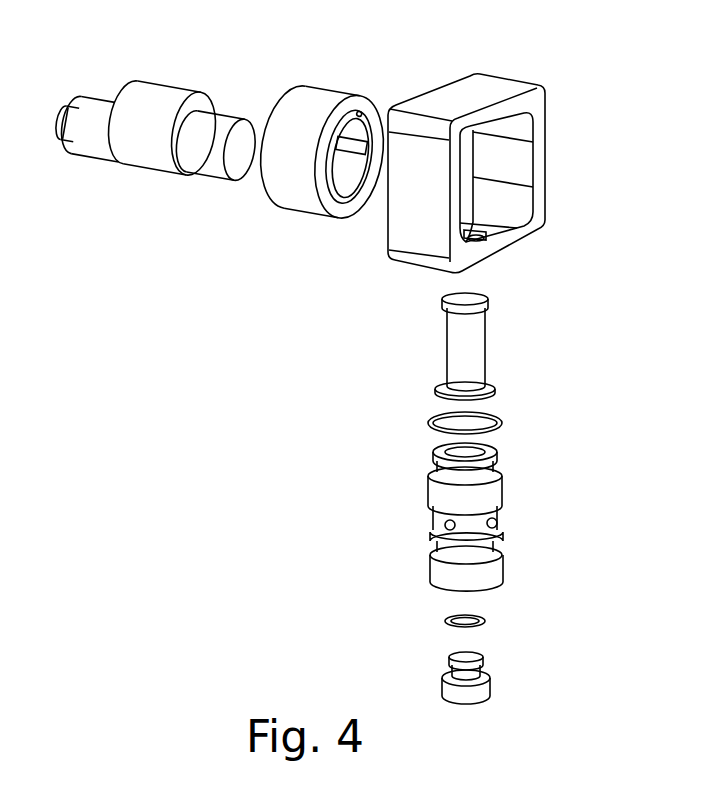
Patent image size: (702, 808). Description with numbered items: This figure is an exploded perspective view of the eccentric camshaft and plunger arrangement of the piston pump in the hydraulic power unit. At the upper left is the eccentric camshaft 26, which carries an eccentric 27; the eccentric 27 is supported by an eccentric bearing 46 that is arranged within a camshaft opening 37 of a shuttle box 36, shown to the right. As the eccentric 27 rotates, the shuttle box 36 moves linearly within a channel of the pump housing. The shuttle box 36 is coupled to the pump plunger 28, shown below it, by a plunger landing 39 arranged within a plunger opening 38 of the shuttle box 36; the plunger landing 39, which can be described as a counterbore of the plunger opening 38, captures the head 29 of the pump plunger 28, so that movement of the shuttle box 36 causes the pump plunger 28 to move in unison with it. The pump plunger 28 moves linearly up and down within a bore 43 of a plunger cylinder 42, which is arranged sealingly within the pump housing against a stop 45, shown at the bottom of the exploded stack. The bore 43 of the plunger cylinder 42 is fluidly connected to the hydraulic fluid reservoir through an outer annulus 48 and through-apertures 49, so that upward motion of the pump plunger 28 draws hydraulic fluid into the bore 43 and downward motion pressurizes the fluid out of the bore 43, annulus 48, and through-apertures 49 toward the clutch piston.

The eccentric camshaft 26 is at (98, 156).
The eccentric 27 is at (164, 95).
The pump plunger 28 is at (474, 347).
The head 29 is at (443, 303).
The shuttle box 36 is at (537, 116).
The camshaft opening 37 is at (518, 167).
The plunger opening 38 is at (487, 235).
The plunger landing 39 is at (490, 229).
The plunger cylinder 42 is at (496, 493).
The bore 43 is at (484, 446).
The stop 45 is at (490, 688).
The eccentric bearing 46 is at (328, 104).
The outer annulus 48 is at (438, 515).
The through-apertures 49 is at (500, 525).